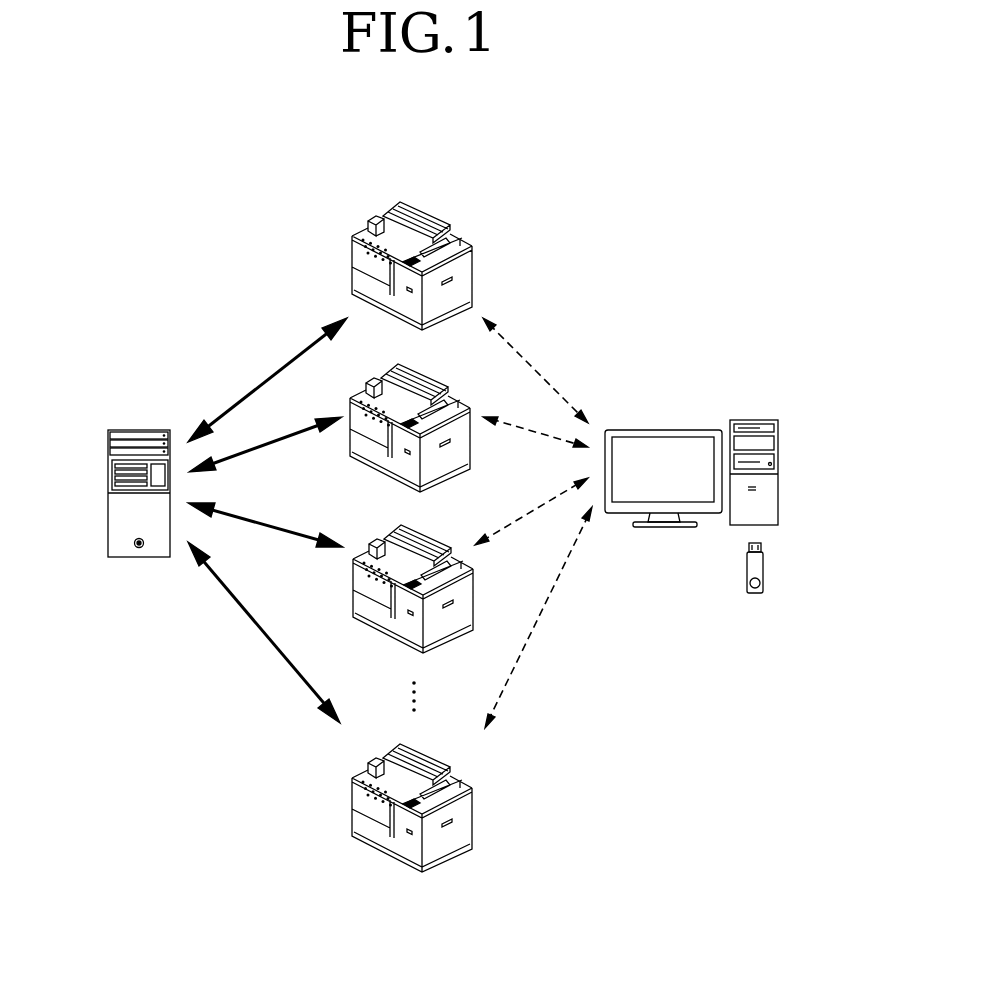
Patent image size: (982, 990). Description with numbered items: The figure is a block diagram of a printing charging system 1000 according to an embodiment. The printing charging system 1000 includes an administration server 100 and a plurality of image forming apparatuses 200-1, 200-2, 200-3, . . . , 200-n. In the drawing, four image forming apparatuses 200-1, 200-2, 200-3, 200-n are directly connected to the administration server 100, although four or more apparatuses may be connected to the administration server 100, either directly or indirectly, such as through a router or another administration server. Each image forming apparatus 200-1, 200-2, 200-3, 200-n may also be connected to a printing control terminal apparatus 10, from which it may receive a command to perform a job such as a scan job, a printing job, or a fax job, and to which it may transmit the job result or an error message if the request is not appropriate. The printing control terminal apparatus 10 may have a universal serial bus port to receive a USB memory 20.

The printing charging system 1000 is at (504, 129).
The administration server 100 is at (137, 429).
The image forming apparatus 200-1 is at (460, 246).
The image forming apparatus 200-2 is at (462, 407).
The image forming apparatus 200-3 is at (438, 547).
The image forming apparatus 200-n is at (428, 753).
The printing control terminal apparatus 10 is at (674, 430).
The USB memory 20 is at (747, 570).